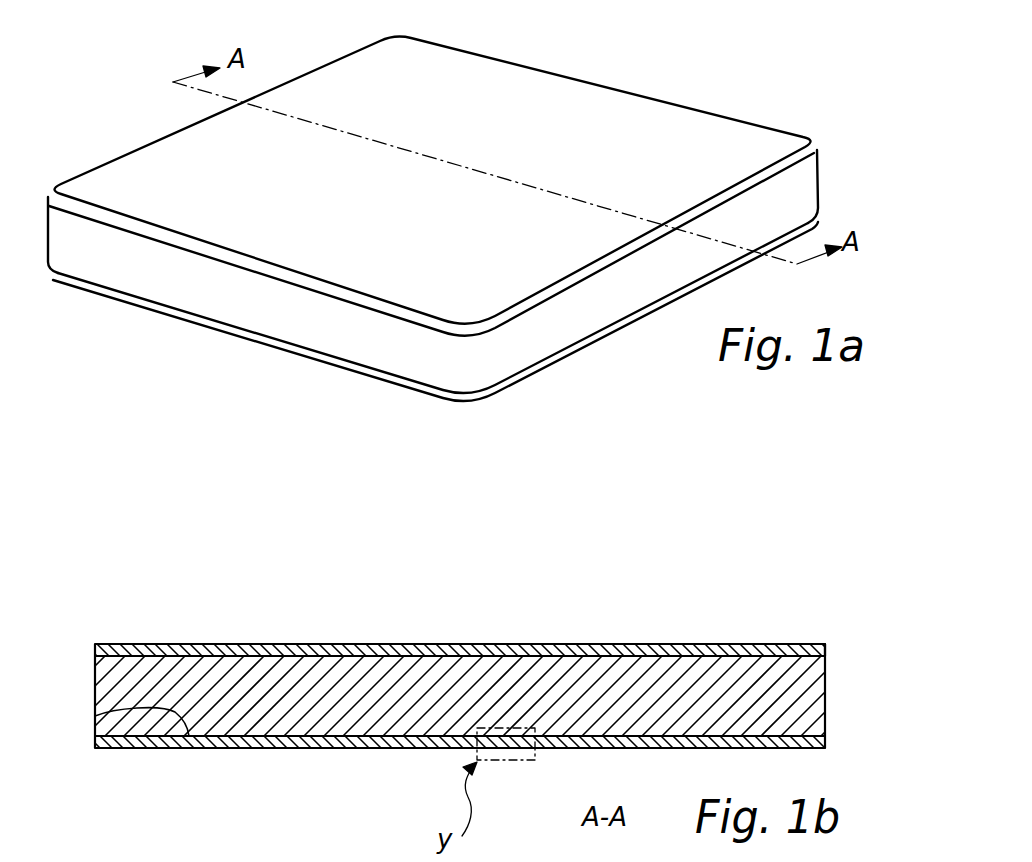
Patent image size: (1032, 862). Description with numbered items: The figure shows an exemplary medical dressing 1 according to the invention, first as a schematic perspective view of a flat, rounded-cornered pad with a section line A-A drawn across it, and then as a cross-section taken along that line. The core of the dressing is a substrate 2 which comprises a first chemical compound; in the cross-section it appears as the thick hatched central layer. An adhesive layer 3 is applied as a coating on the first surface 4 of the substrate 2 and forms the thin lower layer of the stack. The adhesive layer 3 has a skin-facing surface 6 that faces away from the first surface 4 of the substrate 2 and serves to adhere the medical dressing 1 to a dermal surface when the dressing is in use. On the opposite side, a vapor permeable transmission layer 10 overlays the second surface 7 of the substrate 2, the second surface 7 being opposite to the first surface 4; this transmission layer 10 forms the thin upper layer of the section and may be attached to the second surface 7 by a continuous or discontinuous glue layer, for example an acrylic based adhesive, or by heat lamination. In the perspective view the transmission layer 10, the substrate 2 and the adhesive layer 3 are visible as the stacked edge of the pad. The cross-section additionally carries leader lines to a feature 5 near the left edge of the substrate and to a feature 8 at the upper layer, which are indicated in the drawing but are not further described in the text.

In FIG. 1A, the medical dressing 1 is at (471, 200).
In FIG. 1A, the substrate 2 is at (808, 187).
In FIG. 1B, the substrate 2 is at (797, 697).
In FIG. 1A, the adhesive layer 3 is at (817, 231).
In FIG. 1B, the adhesive layer 3 is at (818, 741).
In FIG. 1B, the first surface 4 is at (353, 740).
In FIG. 1B, the edge region 5 is at (95, 716).
In FIG. 1B, the skin-facing surface 6 is at (287, 749).
In FIG. 1B, the second surface 7 is at (487, 644).
In FIG. 1B, the top layer 8 is at (703, 644).
In FIG. 1A, the vapor permeable transmission layer 10 is at (763, 124).
In FIG. 1B, the vapor permeable transmission layer 10 is at (802, 646).